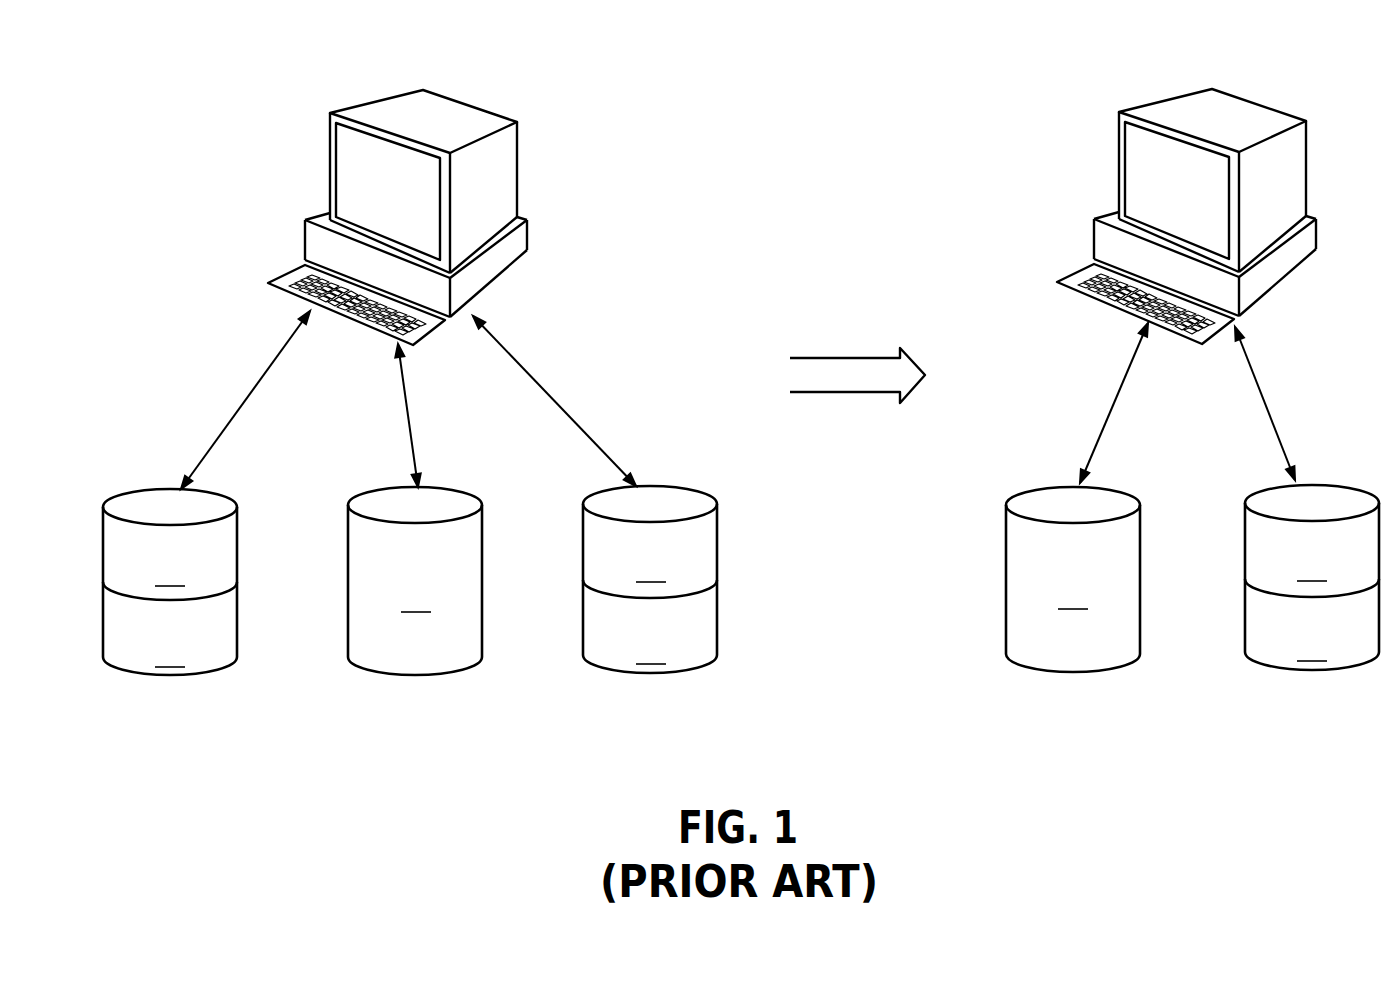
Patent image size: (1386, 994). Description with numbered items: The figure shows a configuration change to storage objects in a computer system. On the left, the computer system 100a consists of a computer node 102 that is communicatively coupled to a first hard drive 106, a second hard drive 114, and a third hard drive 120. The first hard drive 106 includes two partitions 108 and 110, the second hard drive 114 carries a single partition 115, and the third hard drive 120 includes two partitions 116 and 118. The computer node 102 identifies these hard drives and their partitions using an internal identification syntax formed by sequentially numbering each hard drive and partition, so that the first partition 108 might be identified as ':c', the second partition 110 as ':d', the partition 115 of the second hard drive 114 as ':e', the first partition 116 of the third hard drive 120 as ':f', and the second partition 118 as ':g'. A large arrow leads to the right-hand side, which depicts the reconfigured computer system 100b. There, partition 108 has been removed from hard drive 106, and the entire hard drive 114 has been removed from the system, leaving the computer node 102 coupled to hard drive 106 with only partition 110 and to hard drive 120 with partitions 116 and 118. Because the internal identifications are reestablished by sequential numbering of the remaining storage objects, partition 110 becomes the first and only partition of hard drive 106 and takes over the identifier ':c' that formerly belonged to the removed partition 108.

The computer system 100a is at (643, 202).
The computer system 100b is at (1027, 197).
The computer node 102 is at (307, 167).
The first hard drive 106 is at (621, 630).
The first partition 108 is at (170, 568).
The second partition 110 is at (140, 678).
The second hard drive 114 is at (412, 630).
The partition 115 is at (416, 588).
The first partition 116 is at (981, 564).
The second partition 118 is at (597, 677).
The third hard drive 120 is at (971, 628).